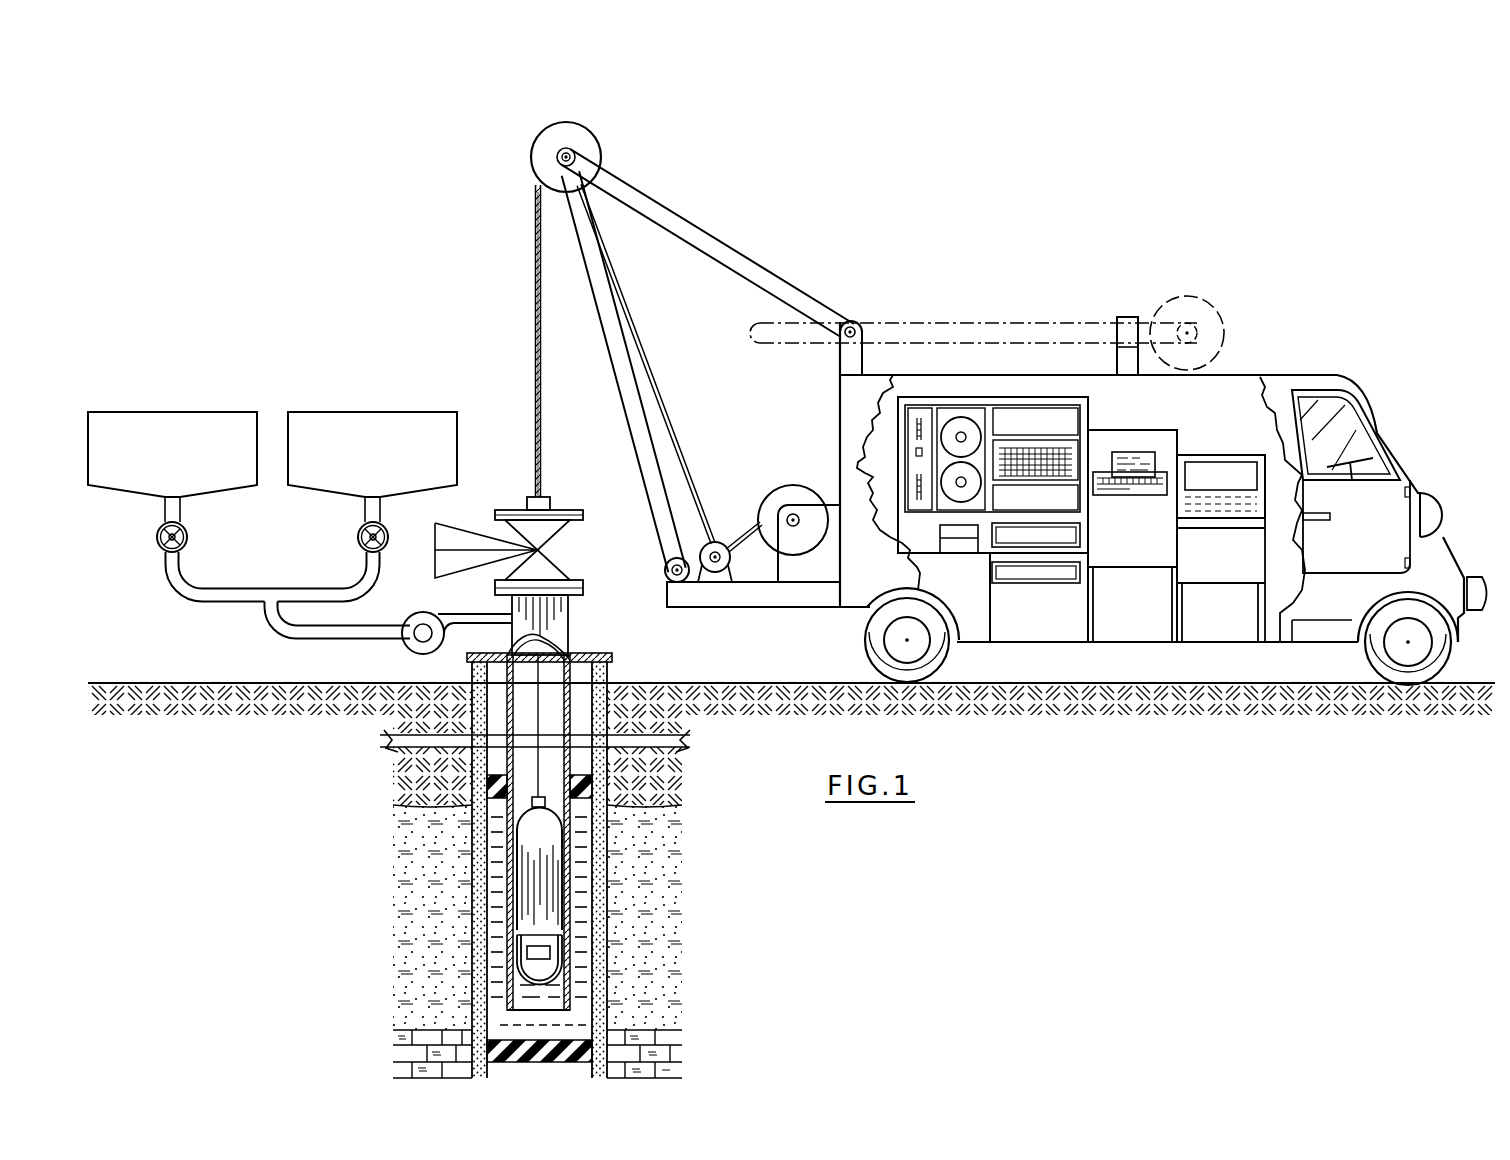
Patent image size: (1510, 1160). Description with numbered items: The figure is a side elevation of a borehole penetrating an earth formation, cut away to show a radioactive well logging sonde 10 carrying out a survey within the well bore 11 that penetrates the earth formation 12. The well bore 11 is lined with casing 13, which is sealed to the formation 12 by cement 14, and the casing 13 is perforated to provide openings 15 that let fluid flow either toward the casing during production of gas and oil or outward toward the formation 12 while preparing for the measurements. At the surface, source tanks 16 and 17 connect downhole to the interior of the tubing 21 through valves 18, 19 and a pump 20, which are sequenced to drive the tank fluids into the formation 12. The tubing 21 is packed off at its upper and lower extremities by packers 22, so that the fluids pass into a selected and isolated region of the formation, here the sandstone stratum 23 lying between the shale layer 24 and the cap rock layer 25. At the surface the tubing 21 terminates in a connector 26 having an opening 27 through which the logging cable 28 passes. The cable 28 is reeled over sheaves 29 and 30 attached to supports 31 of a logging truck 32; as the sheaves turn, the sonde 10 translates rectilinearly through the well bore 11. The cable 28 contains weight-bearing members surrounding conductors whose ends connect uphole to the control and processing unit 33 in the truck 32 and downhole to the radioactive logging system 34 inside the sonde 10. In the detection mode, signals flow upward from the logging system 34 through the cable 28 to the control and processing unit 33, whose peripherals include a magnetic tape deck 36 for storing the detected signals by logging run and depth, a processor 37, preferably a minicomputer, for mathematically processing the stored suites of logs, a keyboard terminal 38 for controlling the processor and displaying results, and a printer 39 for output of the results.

The radioactive well logging sonde 10 is at (538, 832).
The well bore 11 is at (472, 868).
The earth formation 12 is at (690, 882).
The casing 13 is at (590, 672).
The cement 14 is at (607, 708).
The openings 15 is at (478, 930).
The source tank 16 is at (170, 412).
The source tank 17 is at (367, 412).
The valve 18 is at (188, 540).
The valve 19 is at (358, 540).
The pump 20 is at (413, 612).
The tubing 21 is at (560, 660).
The packers 22 is at (497, 775).
The sandstone stratum 23 is at (662, 917).
The shale layer 24 is at (400, 1053).
The cap rock layer 25 is at (665, 775).
The connector 26 is at (552, 542).
The opening 27 is at (548, 497).
The logging cable 28 is at (535, 295).
The sheave 29 is at (530, 157).
The sheave 30 is at (718, 545).
The supports 31 is at (665, 220).
The logging truck 32 is at (1052, 375).
The control and processing unit 33 is at (1165, 412).
The radioactive logging system 34 is at (555, 950).
The magnetic tape deck 36 is at (940, 415).
The processor 37 is at (1010, 415).
The keyboard terminal 38 is at (1228, 468).
The printer 39 is at (1100, 430).